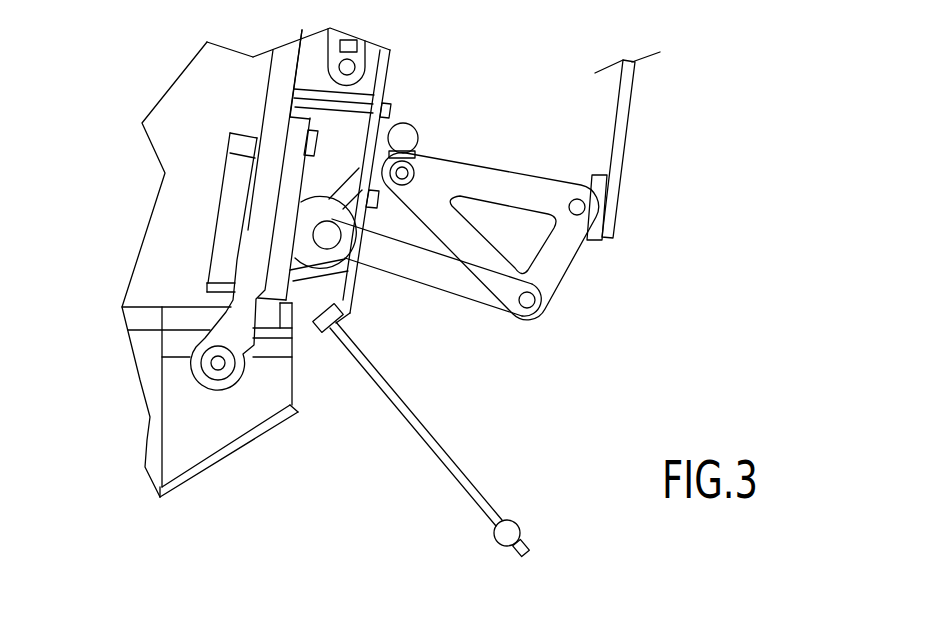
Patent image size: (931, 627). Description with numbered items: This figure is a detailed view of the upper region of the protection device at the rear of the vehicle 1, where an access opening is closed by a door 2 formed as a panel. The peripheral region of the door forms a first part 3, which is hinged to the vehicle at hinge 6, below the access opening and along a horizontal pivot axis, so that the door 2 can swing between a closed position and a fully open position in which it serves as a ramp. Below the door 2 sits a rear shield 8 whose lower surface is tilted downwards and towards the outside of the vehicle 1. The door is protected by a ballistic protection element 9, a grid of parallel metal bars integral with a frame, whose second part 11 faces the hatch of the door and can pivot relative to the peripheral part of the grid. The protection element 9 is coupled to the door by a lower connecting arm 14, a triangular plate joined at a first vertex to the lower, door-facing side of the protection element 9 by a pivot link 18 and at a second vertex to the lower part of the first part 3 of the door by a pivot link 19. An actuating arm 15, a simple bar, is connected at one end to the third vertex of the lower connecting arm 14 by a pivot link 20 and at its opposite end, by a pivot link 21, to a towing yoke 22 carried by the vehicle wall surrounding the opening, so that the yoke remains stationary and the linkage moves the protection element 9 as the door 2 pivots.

The vehicle 1 is at (178, 117).
The door 2 is at (399, 68).
The first part of the door 3 is at (380, 93).
The hinge of the first part to the vehicle 6 is at (192, 366).
The rear shield 8 is at (185, 436).
The ballistic protection element 9 is at (633, 104).
The second part of the protection element 11 is at (620, 145).
The lower connecting arm 14 is at (568, 262).
The actuating arm 15 is at (429, 290).
The pivot link 18 is at (588, 206).
The pivot link 19 is at (404, 171).
The pivot link 20 is at (526, 304).
The pivot link 21 is at (325, 237).
The towing yoke 22 is at (312, 206).